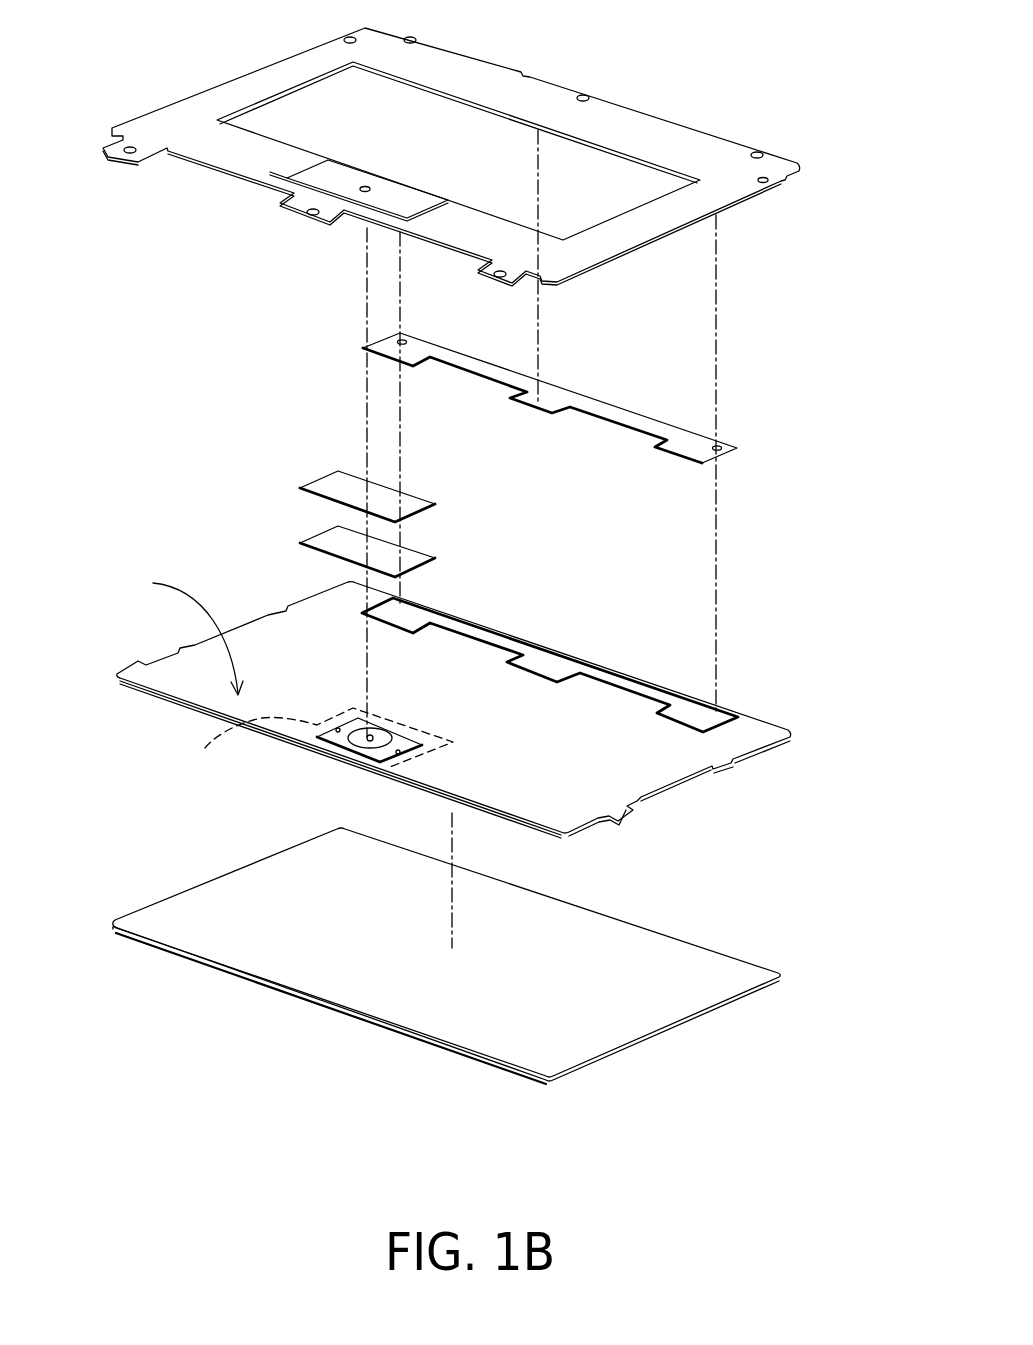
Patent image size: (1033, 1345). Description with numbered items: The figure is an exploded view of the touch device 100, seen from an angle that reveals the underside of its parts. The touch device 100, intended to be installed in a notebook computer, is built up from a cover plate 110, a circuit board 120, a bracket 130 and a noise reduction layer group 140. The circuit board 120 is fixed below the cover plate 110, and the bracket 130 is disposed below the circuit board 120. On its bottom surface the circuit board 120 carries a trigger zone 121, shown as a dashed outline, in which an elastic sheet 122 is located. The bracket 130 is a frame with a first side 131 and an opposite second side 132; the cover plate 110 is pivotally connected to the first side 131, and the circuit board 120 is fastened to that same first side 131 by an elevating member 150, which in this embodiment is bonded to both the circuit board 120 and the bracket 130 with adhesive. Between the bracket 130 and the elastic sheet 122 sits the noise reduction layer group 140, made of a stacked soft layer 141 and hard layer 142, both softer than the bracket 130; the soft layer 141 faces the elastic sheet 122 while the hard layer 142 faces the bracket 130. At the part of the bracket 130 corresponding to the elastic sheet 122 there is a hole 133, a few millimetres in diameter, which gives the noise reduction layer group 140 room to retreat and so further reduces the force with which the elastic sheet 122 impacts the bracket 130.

The touch device 100 is at (872, 1167).
The cover plate 110 is at (643, 1020).
The circuit board 120 is at (745, 743).
The trigger zone 121 is at (214, 744).
The elastic sheet 122 is at (357, 748).
The bracket 130 is at (733, 195).
The first side 131 is at (670, 73).
The second side 132 is at (183, 198).
The hole 133 is at (366, 184).
The noise reduction layer group 140 is at (371, 521).
The soft layer 141 is at (413, 557).
The hard layer 142 is at (418, 503).
The elevating member 150 is at (703, 443).